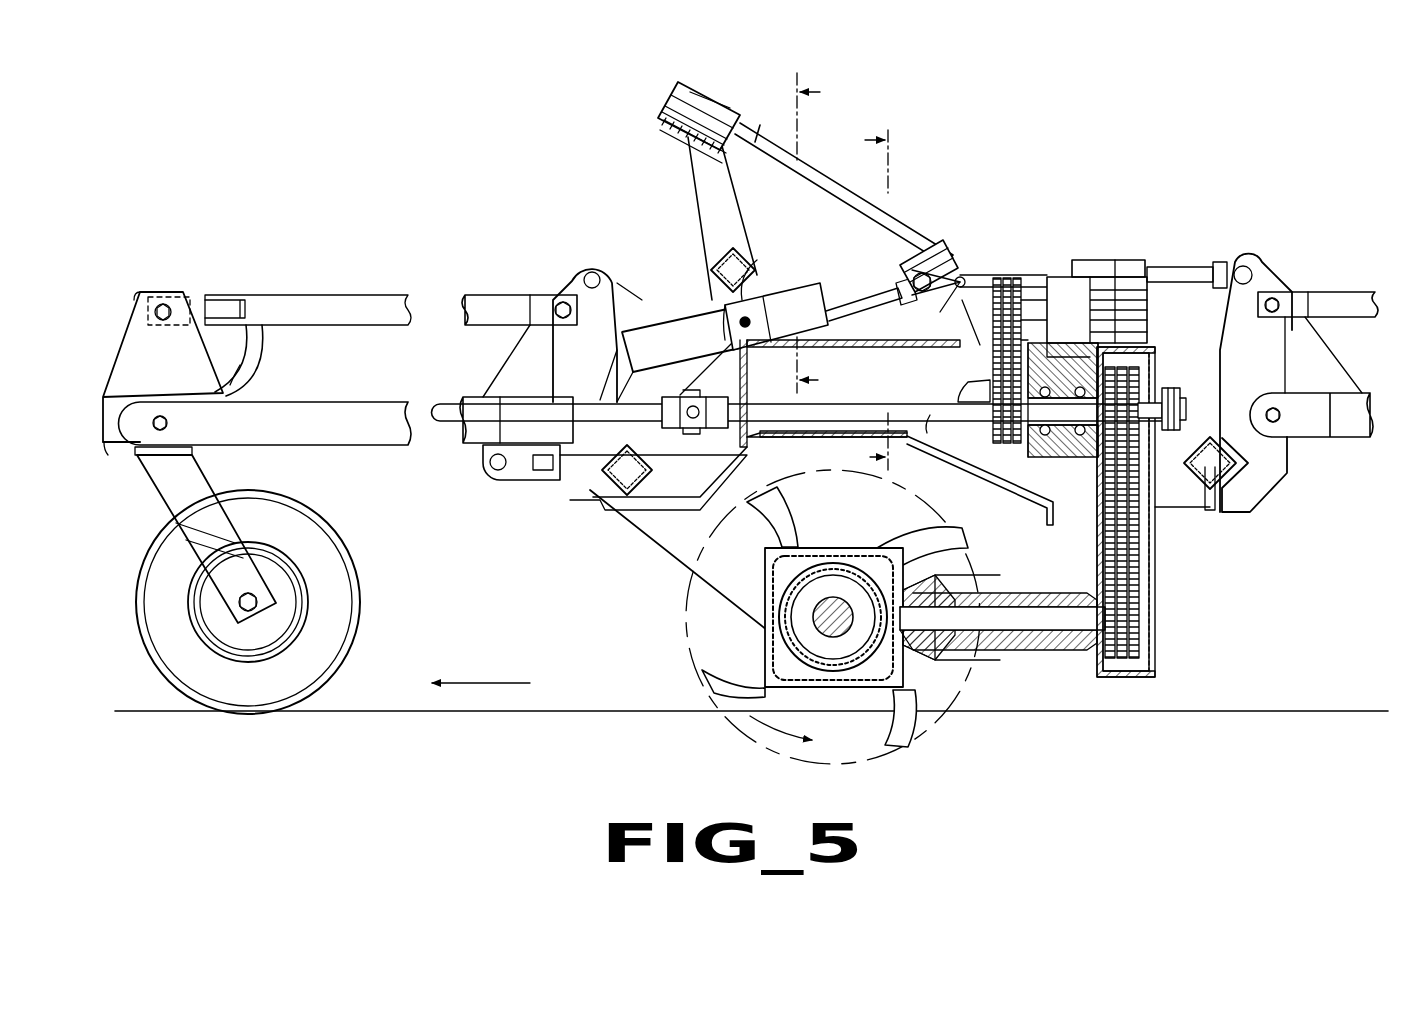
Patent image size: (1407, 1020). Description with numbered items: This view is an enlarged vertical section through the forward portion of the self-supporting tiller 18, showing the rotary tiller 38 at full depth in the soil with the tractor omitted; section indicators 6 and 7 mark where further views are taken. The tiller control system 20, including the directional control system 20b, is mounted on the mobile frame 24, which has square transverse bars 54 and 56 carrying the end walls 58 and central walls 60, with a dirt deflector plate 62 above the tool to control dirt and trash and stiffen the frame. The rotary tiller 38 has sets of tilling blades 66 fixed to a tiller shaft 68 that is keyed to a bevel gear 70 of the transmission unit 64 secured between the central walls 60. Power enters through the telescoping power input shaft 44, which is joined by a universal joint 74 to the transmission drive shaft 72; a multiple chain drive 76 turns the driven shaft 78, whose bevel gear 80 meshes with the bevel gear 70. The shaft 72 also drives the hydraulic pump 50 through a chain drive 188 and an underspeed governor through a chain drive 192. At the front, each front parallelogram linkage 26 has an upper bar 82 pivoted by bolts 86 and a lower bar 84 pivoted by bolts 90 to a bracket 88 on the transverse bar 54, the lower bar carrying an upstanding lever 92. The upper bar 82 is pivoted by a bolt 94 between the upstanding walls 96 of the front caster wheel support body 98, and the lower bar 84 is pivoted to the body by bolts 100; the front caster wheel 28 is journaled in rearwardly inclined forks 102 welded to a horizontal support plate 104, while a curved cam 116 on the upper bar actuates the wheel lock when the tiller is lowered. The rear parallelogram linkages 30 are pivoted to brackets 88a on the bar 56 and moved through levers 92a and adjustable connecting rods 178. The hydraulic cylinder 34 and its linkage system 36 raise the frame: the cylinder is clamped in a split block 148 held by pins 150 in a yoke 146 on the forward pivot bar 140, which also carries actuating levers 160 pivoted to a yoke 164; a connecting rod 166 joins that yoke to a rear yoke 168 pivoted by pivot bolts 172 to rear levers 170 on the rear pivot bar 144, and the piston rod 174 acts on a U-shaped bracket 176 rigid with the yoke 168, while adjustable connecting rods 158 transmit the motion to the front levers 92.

The self-supporting tiller 18 is at (1190, 222).
The tiller control system 20 is at (665, 300).
The directional control system 20b is at (272, 340).
The mobile frame 24 is at (590, 497).
The front parallelogram linkages 26 is at (333, 292).
The front caster wheels 28 is at (346, 600).
The rear parallelogram linkages 30 is at (1340, 285).
The hydraulic cylinder 34 is at (650, 354).
The linkage system 36 is at (660, 100).
The rotary tiller 38 is at (701, 680).
The power input shaft 44 is at (454, 404).
The hydraulic pump 50 is at (1110, 267).
The transverse bar 54 is at (652, 455).
The transverse bar 56 is at (1205, 489).
The end walls 58 is at (731, 580).
The central walls 60 is at (932, 374).
The dirt deflector plate 62 is at (956, 462).
The transmission unit 64 is at (1160, 658).
The tilling blades 66 is at (900, 530).
The tiller shaft 68 is at (817, 610).
The bevel gear 70 is at (790, 643).
The transmission drive shaft 72 is at (930, 423).
The universal joint 74 is at (688, 402).
The multiple chain drive 76 is at (1140, 593).
The driven shaft 78 is at (1032, 618).
The bevel gear 80 is at (905, 583).
The upper bar 82 is at (469, 293).
The lower bar 84 is at (471, 443).
The bolts 86 is at (556, 304).
The bracket 88 is at (570, 372).
The brackets 88a is at (1272, 485).
The bolts 90 is at (542, 437).
The lever 92 is at (522, 340).
The levers 92a is at (1262, 265).
The bolt 94 is at (163, 305).
The upstanding walls 96 is at (178, 362).
The front caster wheel support body 98 is at (135, 452).
The bolts 100 is at (167, 423).
The forks 102 is at (196, 487).
The horizontal support plate 104 is at (130, 460).
The curved cam 116 is at (240, 375).
The forward pivot bar 140 is at (715, 262).
The rear pivot bar 144 is at (970, 390).
The yoke 146 is at (760, 287).
The split block 148 is at (750, 303).
The pins 150 is at (750, 322).
The adjustable connecting rods 158 is at (640, 287).
The actuating levers 160 is at (692, 164).
The yoke 164 is at (725, 98).
The connecting rod 166 is at (782, 162).
The yoke 168 is at (960, 280).
The rear levers 170 is at (930, 328).
The pivot bolts 172 is at (963, 282).
The piston rod 174 is at (862, 296).
The U-shaped bracket 176 is at (930, 250).
The adjustable connecting rods 178 is at (1174, 268).
The chain drive 188 is at (1025, 334).
The chain drive 192 is at (1168, 388).
The section line 6 is at (819, 233).
The section line 7 is at (866, 297).